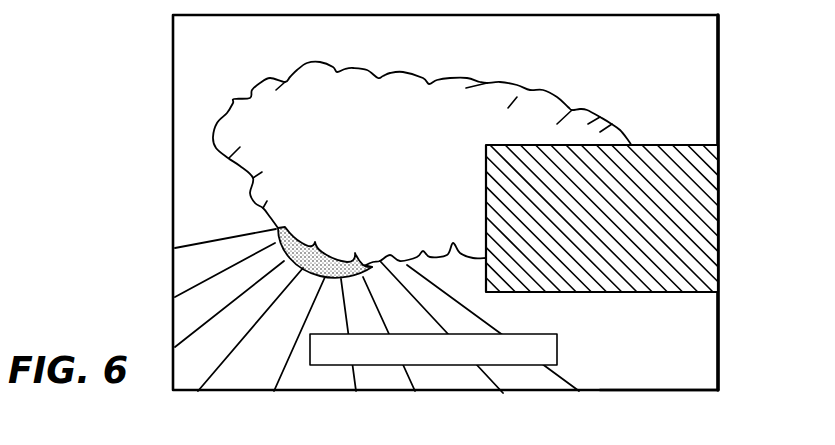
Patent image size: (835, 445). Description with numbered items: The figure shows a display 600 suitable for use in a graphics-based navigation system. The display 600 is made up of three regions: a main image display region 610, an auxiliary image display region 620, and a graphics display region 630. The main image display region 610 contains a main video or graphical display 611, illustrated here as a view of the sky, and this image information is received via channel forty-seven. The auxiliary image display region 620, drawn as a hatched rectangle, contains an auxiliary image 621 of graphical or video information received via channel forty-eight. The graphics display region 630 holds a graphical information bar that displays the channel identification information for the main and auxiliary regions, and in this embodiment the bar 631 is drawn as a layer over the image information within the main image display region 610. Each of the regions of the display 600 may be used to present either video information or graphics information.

The display 600 is at (88, 318).
The main image display region 610 is at (173, 230).
The main video or graphical display 611 is at (675, 363).
The auxiliary image display region 620 is at (649, 245).
The auxiliary image 621 is at (677, 177).
The graphics display region 630 is at (444, 387).
The channel label text 631 is at (550, 352).